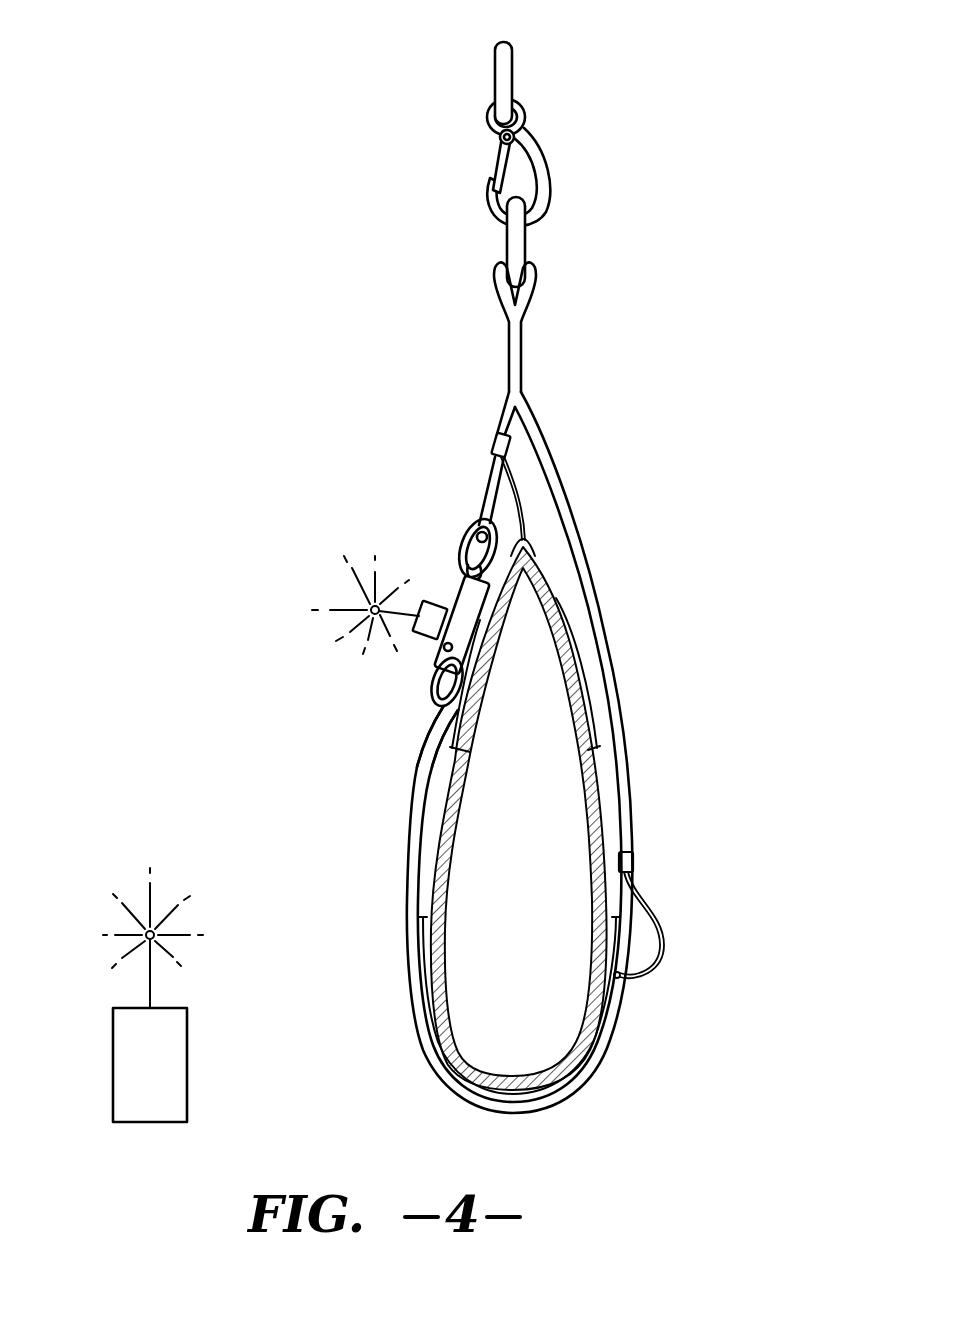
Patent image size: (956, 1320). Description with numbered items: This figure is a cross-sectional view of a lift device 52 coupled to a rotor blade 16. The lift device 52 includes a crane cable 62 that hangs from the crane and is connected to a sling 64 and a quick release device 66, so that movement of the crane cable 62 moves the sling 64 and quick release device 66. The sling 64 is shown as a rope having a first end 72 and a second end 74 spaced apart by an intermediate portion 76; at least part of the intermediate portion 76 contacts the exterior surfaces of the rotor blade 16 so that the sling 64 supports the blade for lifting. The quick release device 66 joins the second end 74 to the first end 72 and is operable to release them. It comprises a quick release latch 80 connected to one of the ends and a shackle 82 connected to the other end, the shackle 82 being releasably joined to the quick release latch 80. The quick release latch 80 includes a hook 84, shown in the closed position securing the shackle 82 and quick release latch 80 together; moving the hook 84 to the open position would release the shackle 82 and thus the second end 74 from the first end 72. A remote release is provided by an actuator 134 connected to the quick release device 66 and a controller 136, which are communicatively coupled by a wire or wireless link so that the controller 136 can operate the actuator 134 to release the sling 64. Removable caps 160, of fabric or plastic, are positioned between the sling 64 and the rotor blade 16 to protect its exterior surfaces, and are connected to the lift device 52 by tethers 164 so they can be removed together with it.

The rotor blade 16 is at (565, 807).
The lift device 52 is at (378, 247).
The crane cable 62 is at (513, 65).
The sling 64 is at (599, 548).
The quick release device 66 is at (449, 547).
The first end 72 is at (483, 530).
The second end 74 is at (443, 708).
The intermediate portion 76 is at (553, 503).
The quick release latch 80 is at (463, 593).
The shackle 82 is at (427, 693).
The hook 84 is at (437, 662).
The actuator 134 is at (437, 602).
The controller 136 is at (187, 1068).
The removable cap 160 is at (567, 627).
The tether 164 is at (510, 483).